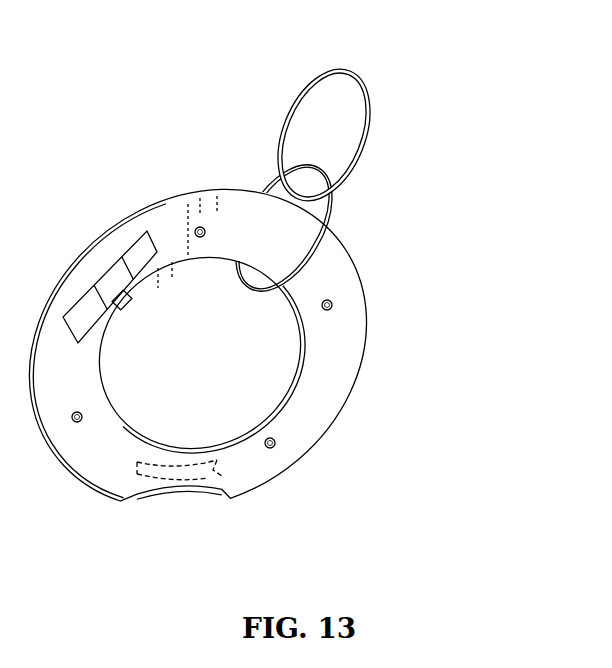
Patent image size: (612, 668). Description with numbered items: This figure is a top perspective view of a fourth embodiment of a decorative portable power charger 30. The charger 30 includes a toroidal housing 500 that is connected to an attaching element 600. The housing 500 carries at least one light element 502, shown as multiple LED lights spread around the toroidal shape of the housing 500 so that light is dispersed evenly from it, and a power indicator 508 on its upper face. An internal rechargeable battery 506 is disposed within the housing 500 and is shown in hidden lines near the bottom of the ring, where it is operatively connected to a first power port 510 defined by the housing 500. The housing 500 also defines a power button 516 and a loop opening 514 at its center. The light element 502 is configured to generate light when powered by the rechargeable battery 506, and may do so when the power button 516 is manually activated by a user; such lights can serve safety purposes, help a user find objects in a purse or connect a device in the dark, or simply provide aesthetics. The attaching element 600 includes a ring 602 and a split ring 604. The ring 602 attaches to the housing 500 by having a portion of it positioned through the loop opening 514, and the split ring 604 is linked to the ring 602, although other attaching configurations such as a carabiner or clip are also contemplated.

The decorative portable power charger 30 is at (446, 61).
The housing 500 is at (366, 300).
The light element 502 is at (205, 228).
The rechargeable battery 506 is at (247, 498).
The power indicator 508 is at (98, 270).
The first power port 510 is at (177, 508).
The loop opening 514 is at (256, 372).
The power button 516 is at (126, 306).
The attaching element 600 is at (352, 203).
The ring 602 is at (326, 226).
The split ring 604 is at (372, 118).